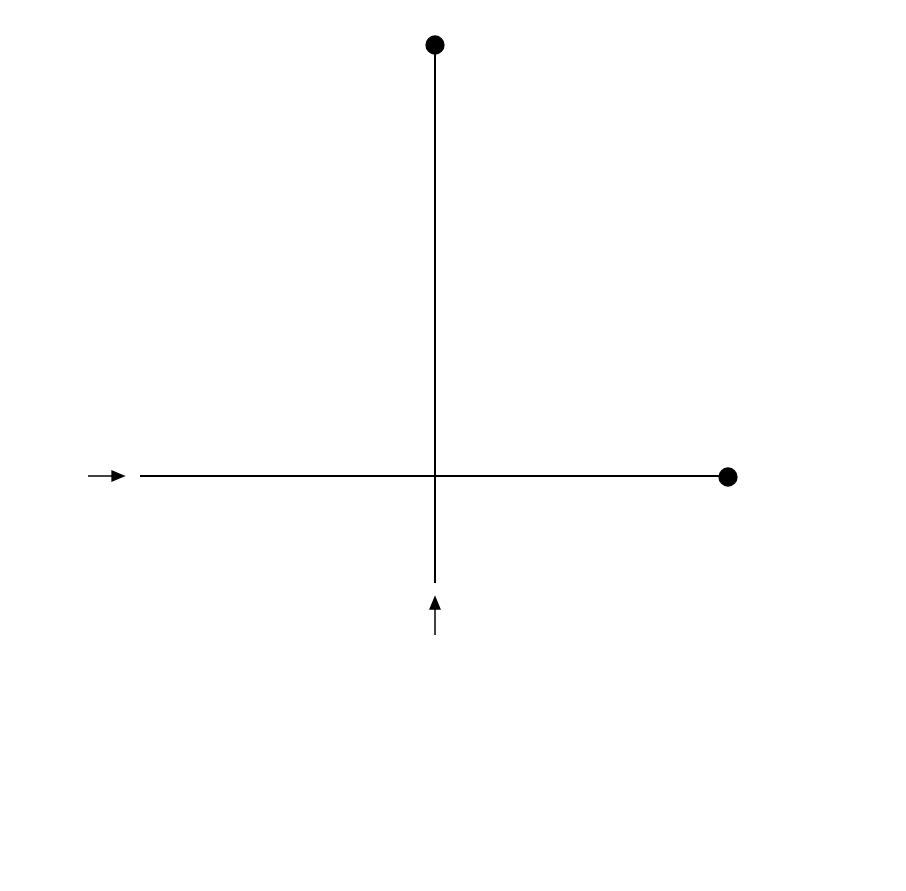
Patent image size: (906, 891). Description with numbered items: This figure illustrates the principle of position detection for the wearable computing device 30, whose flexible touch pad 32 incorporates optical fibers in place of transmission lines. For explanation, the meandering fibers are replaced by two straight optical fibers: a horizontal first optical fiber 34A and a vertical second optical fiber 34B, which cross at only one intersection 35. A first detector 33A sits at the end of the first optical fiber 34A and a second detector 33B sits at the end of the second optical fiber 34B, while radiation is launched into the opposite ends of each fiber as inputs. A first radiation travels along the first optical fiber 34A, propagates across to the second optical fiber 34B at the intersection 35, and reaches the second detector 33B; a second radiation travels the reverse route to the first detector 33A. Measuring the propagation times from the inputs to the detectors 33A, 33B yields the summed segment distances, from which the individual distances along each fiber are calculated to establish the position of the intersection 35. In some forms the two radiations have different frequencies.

The wearable computing device 30 is at (688, 50).
The flexible touch pad 32 is at (600, 345).
The first detector 33A is at (731, 467).
The second detector 33B is at (437, 35).
The first optical fiber 34A is at (243, 478).
The second optical fiber 34B is at (437, 172).
The intersection 35 is at (436, 474).